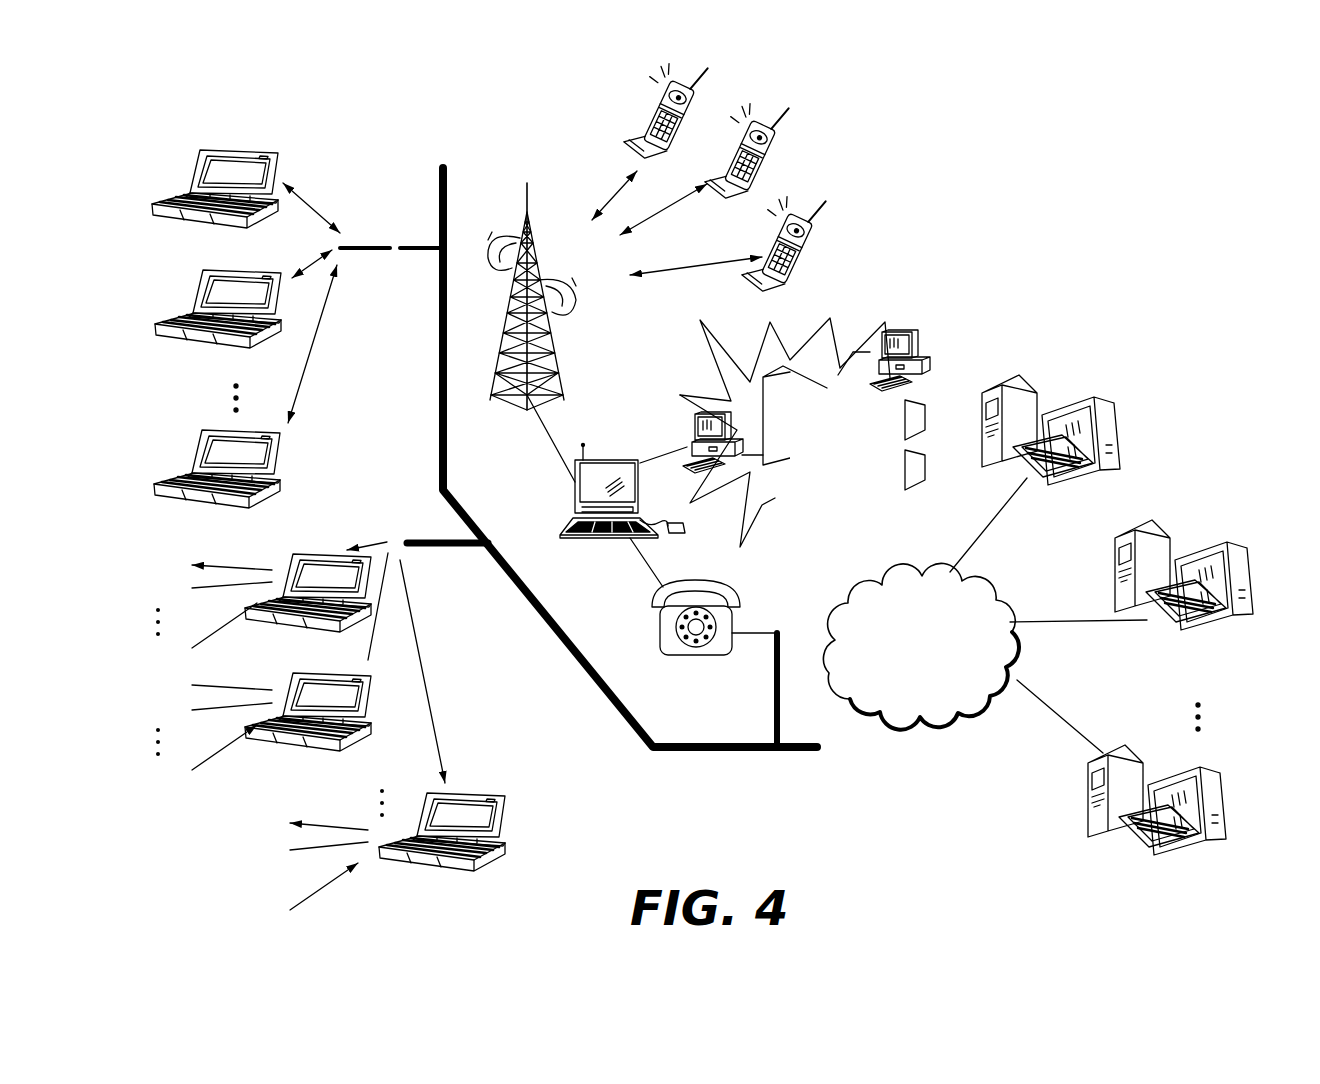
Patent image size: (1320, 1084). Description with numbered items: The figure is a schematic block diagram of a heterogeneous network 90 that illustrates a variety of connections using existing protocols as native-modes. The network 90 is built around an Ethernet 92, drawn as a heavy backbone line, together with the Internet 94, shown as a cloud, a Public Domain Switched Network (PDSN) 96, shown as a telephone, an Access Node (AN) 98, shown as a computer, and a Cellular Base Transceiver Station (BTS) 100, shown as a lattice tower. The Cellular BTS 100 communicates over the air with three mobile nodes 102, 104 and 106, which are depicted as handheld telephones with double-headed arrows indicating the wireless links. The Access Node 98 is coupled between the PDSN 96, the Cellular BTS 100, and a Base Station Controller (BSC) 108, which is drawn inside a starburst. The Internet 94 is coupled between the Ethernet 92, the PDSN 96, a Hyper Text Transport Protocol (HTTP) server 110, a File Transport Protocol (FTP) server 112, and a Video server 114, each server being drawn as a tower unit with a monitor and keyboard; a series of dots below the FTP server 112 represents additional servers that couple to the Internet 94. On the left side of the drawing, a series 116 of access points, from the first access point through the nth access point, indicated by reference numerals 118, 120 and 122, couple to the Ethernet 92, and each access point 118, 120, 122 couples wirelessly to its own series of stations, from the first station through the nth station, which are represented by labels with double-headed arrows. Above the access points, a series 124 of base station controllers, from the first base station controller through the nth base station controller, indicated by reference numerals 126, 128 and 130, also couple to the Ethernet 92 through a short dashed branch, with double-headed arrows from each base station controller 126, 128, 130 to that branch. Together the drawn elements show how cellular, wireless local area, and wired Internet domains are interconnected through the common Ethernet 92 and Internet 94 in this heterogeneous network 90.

The heterogeneous network 90 is at (1087, 172).
The Ethernet 92 is at (677, 752).
The Internet 94 is at (920, 718).
The Public Domain Switched Network (PDSN) 96 is at (660, 630).
The Access Node (AN) 98 is at (572, 540).
The Cellular Base Transceiver Station (BTS) 100 is at (514, 394).
The mobile node (MN) 102 is at (648, 127).
The mobile node (MN) 104 is at (775, 153).
The mobile node (MN) 106 is at (813, 258).
The Base Station Controller (BSC) 108 is at (885, 320).
The Hyper Text Transport Protocol (HTTP) server 110 is at (1077, 412).
The File Transport Protocol (FTP) server 112 is at (1210, 556).
The Video server 114 is at (1187, 785).
The series of access points 116 is at (210, 870).
The access point AP-1 118 is at (304, 556).
The access point AP-2 120 is at (369, 697).
The access point AP-n 122 is at (498, 820).
The series of base station controllers 124 is at (140, 175).
The base station controller BSC-1 126 is at (282, 166).
The base station controller BSC-2 128 is at (196, 290).
The base station controller BSC-n 130 is at (197, 458).